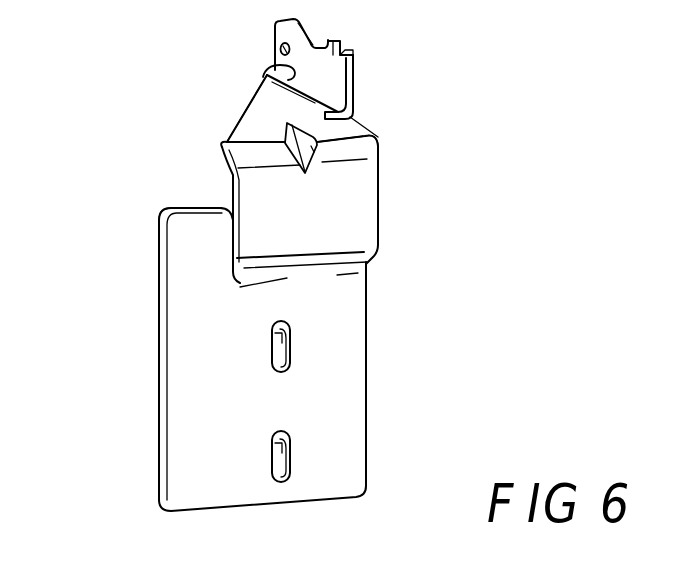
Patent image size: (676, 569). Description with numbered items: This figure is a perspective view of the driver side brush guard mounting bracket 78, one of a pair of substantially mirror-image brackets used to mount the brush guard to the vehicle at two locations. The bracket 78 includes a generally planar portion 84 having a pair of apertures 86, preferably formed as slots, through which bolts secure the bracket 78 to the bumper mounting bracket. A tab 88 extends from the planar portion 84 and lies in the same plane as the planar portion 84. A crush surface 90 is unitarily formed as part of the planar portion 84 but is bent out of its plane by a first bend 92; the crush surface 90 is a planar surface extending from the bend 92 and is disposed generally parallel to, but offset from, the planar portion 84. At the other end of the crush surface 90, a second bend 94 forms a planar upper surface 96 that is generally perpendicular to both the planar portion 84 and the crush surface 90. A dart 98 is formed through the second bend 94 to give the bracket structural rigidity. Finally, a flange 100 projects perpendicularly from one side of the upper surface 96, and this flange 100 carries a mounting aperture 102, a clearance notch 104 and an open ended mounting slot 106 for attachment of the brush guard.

The brush guard mounting bracket 78 is at (262, 111).
The planar portion 84 is at (352, 490).
The apertures 86 is at (273, 345).
The tab 88 is at (183, 230).
The crush surface 90 is at (366, 237).
The first bend 92 is at (320, 270).
The second bend 94 is at (347, 133).
The upper surface 96 is at (243, 129).
The dart 98 is at (306, 155).
The flange 100 is at (270, 68).
The mounting aperture 102 is at (280, 49).
The clearance notch 104 is at (320, 35).
The open ended mounting slot 106 is at (345, 70).